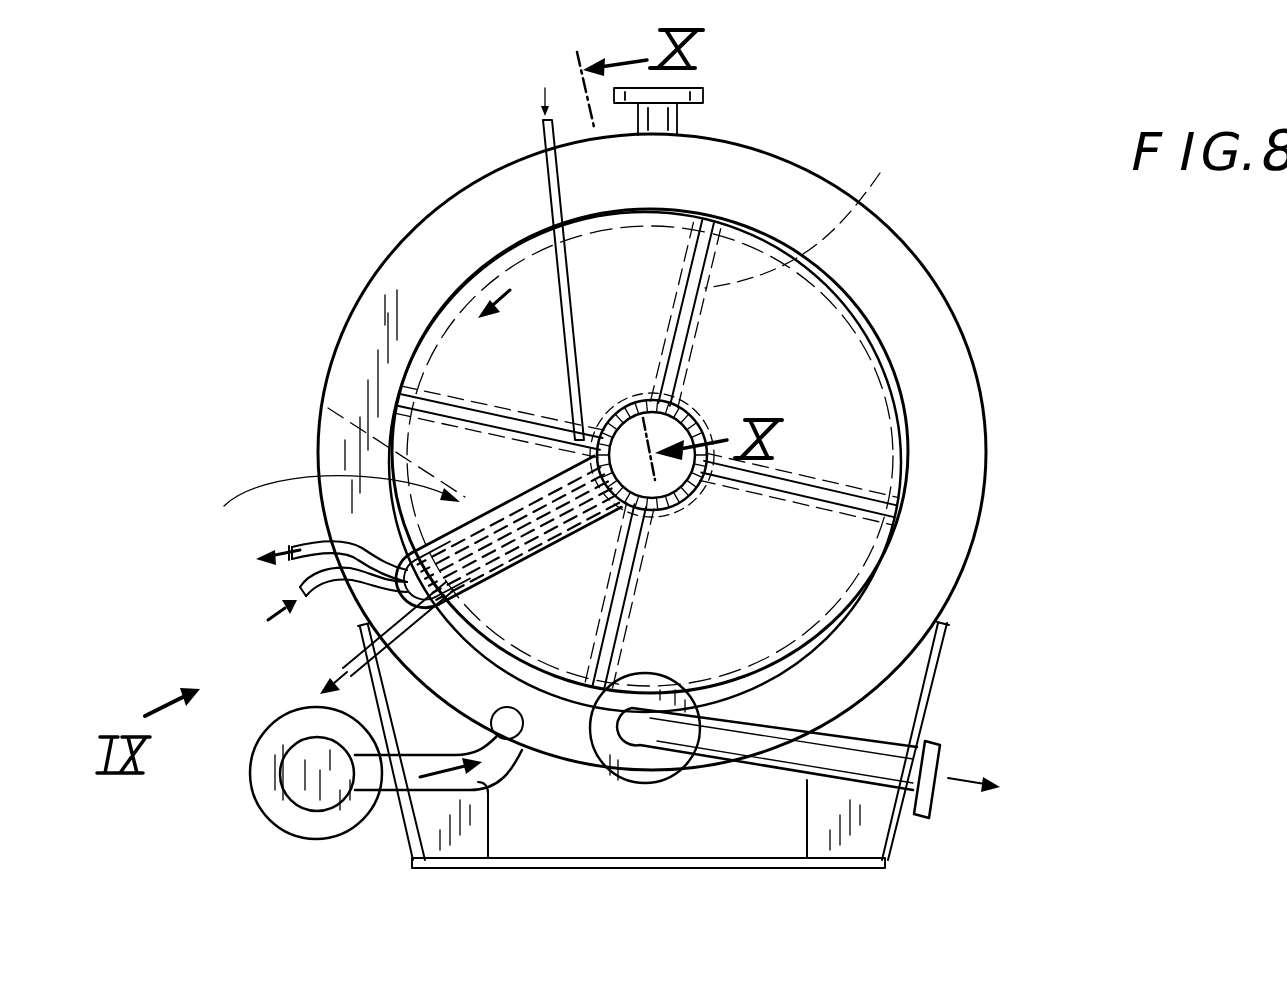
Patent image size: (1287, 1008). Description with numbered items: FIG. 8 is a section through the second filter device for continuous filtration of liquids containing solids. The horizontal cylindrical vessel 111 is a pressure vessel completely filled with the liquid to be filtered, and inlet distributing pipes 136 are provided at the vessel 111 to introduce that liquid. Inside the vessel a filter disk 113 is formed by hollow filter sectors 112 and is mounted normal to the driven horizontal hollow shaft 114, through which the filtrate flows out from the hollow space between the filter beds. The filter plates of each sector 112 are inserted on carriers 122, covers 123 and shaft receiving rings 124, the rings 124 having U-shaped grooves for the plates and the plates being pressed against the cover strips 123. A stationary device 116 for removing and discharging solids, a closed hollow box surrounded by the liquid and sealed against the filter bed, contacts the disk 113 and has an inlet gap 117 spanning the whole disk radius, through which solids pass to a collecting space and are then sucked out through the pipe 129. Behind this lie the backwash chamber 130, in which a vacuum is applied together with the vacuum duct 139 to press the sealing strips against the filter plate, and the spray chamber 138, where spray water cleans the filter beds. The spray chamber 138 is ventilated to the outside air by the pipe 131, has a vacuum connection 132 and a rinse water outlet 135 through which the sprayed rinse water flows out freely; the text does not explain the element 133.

The horizontal cylindrical vessel 111 is at (950, 400).
The hollow filter sector 112 is at (548, 277).
The filter disk 113 is at (893, 352).
The driven horizontal hollow shaft 114 is at (665, 432).
The device for removing and discharging solids 116 is at (321, 501).
The inlet gap 117 is at (503, 489).
The carrier 122 is at (805, 218).
The cover 123 is at (850, 320).
The shaft receiving ring 124 is at (690, 400).
The pipe 129 is at (905, 777).
The backwash chamber 130 is at (328, 408).
The pipe / ventilation 131 is at (548, 142).
The vacuum connection 132 is at (288, 555).
The inlet pipe 133 is at (323, 582).
The rinse water outlet 135 is at (350, 660).
The inlet distributing pipe 136 is at (400, 778).
The spray chamber 138 is at (577, 555).
The vacuum duct 139 is at (503, 582).